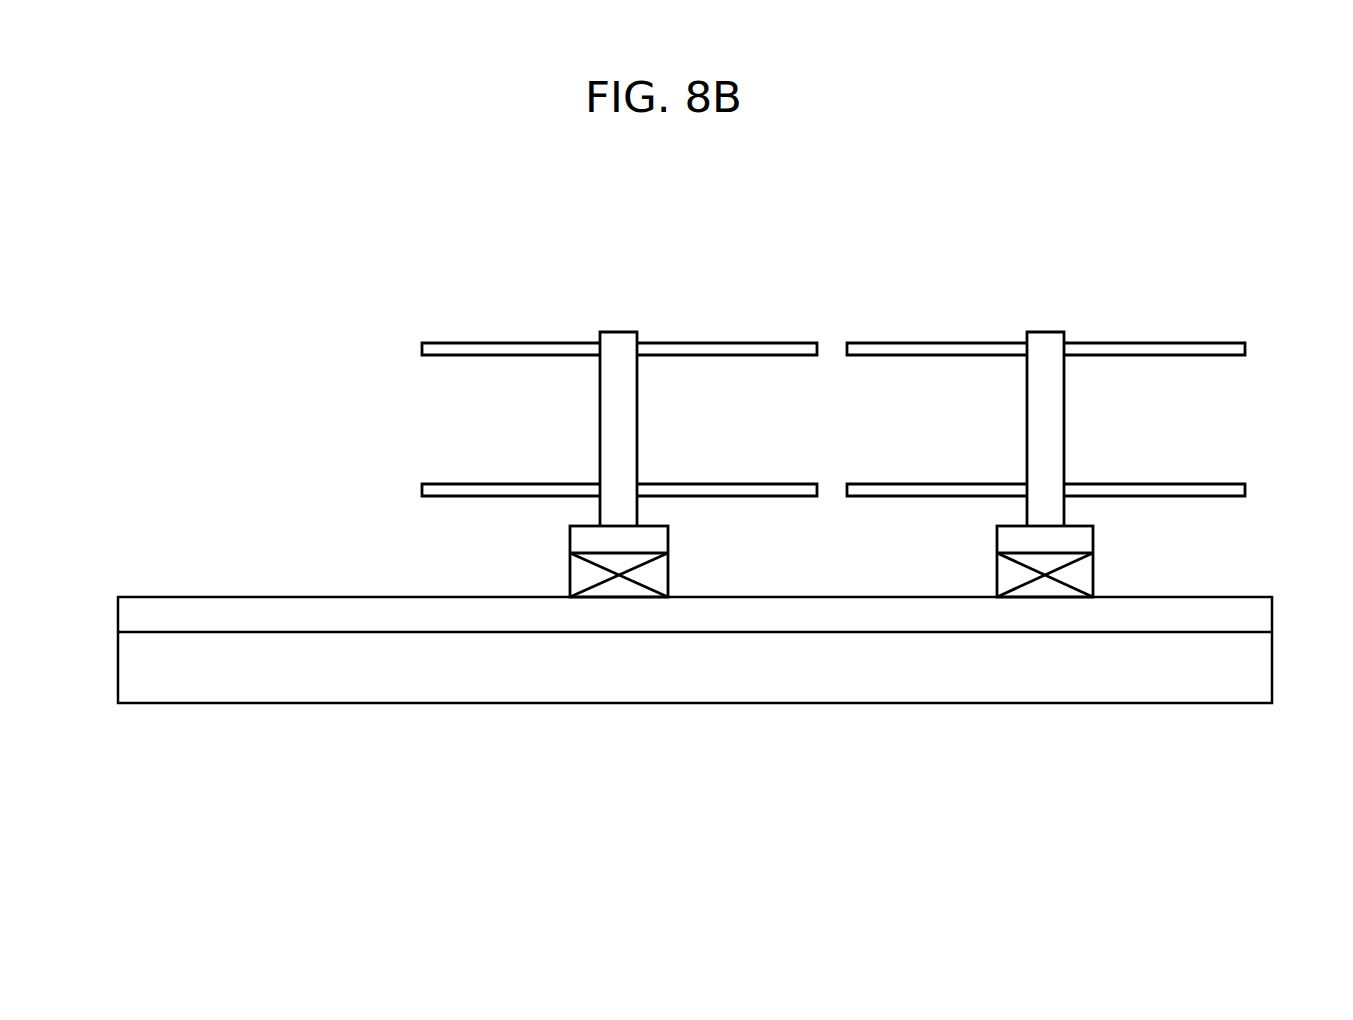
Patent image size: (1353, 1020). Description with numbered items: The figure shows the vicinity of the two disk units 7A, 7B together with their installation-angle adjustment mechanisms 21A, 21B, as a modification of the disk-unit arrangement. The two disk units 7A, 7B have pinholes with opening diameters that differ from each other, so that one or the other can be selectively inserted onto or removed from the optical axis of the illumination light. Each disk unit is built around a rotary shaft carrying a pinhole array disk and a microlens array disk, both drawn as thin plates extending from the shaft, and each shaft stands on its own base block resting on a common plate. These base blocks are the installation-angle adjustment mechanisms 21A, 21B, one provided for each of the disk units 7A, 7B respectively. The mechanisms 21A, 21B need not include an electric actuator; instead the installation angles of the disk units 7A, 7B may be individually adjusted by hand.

The disk unit 7A is at (488, 323).
The disk unit 7B is at (925, 318).
The installation-angle adjustment mechanism 21A is at (570, 571).
The installation-angle adjustment mechanism 21B is at (997, 571).